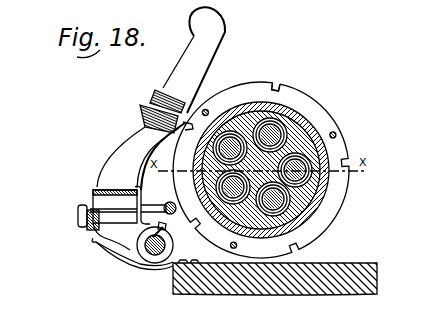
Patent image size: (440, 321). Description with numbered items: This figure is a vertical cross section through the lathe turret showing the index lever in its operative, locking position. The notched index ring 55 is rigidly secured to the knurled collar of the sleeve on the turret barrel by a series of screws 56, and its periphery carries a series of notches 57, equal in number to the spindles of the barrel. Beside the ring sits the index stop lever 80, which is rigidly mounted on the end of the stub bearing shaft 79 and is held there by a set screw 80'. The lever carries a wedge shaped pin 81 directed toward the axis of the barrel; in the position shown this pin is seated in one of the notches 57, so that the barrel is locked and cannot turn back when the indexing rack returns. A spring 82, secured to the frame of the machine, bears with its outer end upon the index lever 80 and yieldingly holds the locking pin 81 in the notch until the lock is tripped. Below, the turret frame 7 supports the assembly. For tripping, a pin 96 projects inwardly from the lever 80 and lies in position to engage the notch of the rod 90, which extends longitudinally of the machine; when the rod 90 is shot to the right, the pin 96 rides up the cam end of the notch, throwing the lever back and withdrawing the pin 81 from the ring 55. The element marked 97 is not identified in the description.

The turret frame 7 is at (378, 277).
The notched index ring 55 is at (309, 100).
The screws 56 is at (208, 110).
The notches 57 is at (280, 84).
The stub bearing shaft 79 is at (125, 260).
The index stop lever 80 is at (150, 98).
The set screw 80' is at (157, 218).
The wedge shaped pin 81 is at (193, 108).
The spring 82 is at (134, 268).
The rod 90 is at (173, 215).
The pin 96 is at (150, 201).
The bolt 97 is at (78, 225).